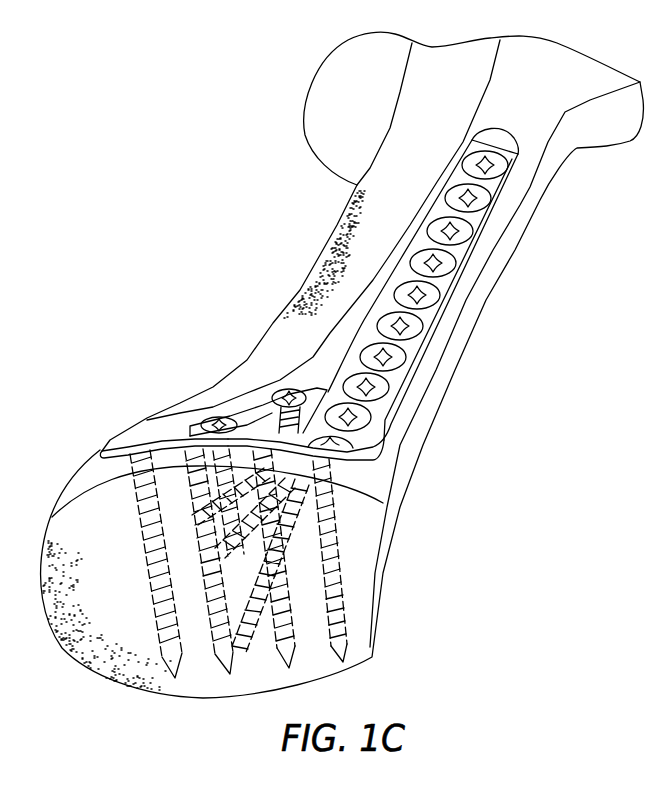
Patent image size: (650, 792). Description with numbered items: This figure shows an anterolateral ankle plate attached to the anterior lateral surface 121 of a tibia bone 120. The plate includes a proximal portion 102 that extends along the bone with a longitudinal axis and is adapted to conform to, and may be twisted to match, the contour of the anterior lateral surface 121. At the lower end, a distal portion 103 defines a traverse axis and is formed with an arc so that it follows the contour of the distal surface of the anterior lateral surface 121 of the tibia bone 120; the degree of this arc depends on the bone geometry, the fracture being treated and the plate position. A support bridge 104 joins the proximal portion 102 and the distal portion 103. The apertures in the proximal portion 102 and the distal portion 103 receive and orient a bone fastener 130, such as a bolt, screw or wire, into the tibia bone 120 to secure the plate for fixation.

The tibia bone 120 is at (503, 256).
The anterior lateral surface 121 is at (445, 325).
The proximal portion 102 is at (397, 380).
The distal portion 103 is at (100, 452).
The support bridge 104 is at (243, 410).
The bone fastener 130 is at (343, 577).